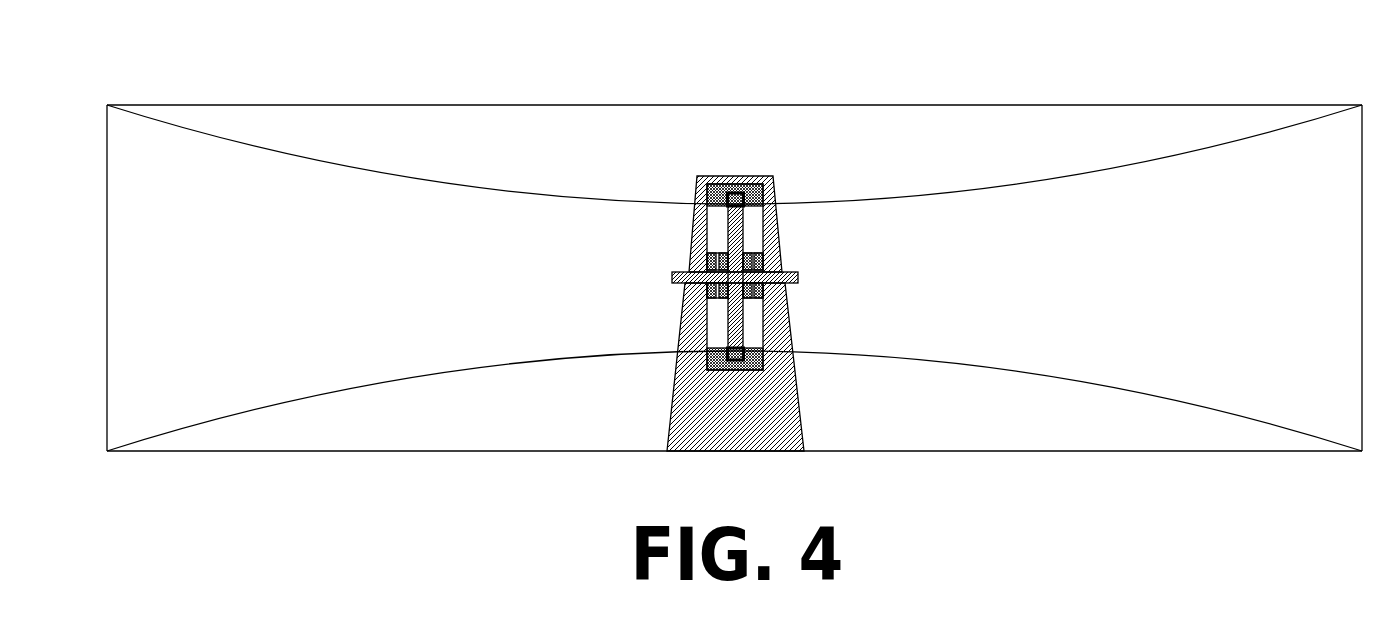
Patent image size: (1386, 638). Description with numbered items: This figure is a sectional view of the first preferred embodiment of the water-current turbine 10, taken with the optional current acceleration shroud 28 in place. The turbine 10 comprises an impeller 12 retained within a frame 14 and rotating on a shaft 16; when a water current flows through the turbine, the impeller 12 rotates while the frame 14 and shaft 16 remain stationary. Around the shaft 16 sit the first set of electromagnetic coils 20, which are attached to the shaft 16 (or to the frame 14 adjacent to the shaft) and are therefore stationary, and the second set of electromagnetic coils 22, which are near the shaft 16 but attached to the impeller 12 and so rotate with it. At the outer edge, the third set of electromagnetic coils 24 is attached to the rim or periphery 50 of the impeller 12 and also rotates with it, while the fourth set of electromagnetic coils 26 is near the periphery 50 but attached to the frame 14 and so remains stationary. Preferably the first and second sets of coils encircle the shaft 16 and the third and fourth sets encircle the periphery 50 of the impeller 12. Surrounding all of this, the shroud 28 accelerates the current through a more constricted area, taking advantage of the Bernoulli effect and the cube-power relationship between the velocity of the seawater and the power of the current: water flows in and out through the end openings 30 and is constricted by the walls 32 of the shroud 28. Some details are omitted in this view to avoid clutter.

The turbine 10 is at (725, 298).
The impeller 12 is at (698, 178).
The frame 14 is at (676, 357).
The shaft 16 is at (672, 278).
The first set of electromagnetic coils 20 is at (706, 260).
The second set of electromagnetic coils 22 is at (722, 252).
The third set of electromagnetic coils 24 is at (728, 207).
The fourth set of electromagnetic coils 26 is at (728, 178).
The current acceleration shroud 28 is at (733, 105).
The end openings 30 is at (107, 262).
The walls 32 is at (442, 185).
The periphery 50 is at (745, 208).